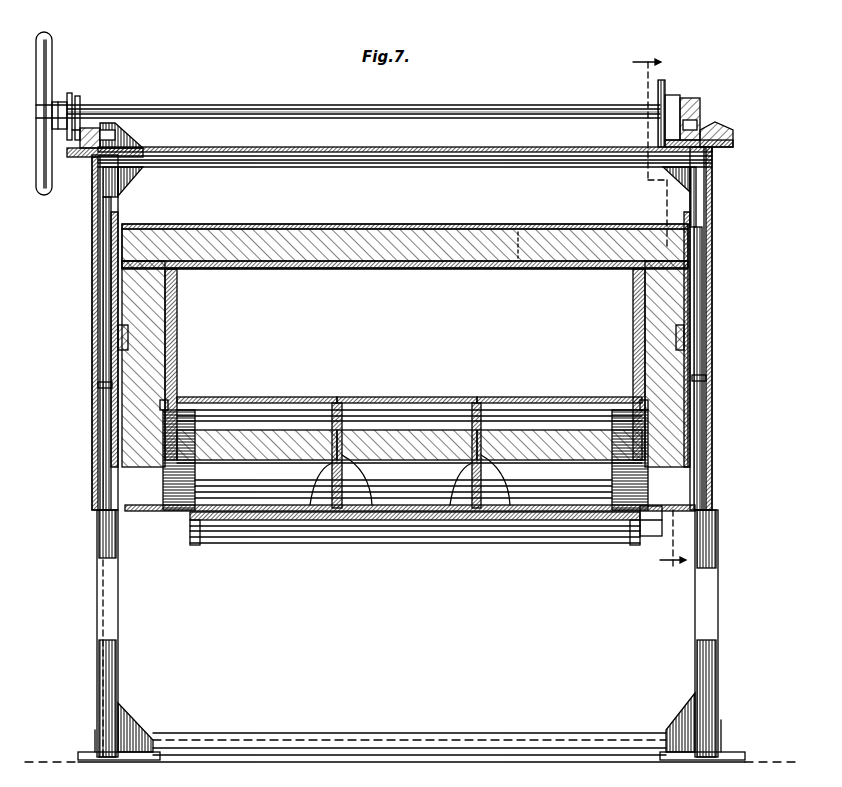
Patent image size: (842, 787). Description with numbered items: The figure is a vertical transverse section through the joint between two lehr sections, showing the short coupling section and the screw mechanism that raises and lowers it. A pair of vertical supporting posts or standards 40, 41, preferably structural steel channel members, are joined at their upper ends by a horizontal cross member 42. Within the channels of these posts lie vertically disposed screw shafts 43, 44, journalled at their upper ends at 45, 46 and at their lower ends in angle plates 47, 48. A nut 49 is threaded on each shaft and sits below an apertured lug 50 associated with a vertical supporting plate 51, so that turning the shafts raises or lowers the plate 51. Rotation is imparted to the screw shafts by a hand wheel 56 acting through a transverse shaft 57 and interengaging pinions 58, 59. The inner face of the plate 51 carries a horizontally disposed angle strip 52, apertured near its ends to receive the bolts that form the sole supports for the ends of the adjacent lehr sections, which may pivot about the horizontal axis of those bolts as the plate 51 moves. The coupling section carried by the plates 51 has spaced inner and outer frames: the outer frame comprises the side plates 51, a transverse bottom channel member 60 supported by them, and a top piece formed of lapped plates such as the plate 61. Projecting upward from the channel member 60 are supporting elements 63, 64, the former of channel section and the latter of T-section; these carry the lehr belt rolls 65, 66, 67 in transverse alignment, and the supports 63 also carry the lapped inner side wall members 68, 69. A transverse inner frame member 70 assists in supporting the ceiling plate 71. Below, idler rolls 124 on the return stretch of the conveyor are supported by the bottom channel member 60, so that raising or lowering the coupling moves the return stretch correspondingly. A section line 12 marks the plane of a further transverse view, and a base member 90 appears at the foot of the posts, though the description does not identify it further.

The section line 12- 12 is at (659, 314).
The supporting post 40 is at (718, 560).
The supporting post 41 is at (97, 572).
The horizontal cross member 42 is at (380, 152).
The screw shaft 43 is at (698, 178).
The screw shaft 44 is at (113, 188).
The upper journal 45 is at (707, 130).
The upper journal 46 is at (112, 146).
The angle plate 47 is at (706, 378).
The angle plate 48 is at (98, 386).
The nut 49 is at (96, 238).
The apertured lug 50 is at (92, 223).
The vertical supporting plate 51 is at (110, 298).
The angle strip 52 is at (126, 334).
The hand wheel 56 is at (46, 75).
The transverse shaft 57 is at (243, 118).
The pinion 58 is at (100, 128).
The pinion 59 is at (687, 108).
The bottom channel member 60 is at (160, 520).
The lapped plate 61 is at (383, 224).
The supporting element 63 is at (245, 528).
The supporting element 64 is at (368, 500).
The lehr belt roll 65 is at (300, 403).
The lehr belt roll 66 is at (406, 405).
The lehr belt roll 67 is at (518, 402).
The inner side wall member 68 is at (173, 325).
The inner side wall member 69 is at (178, 343).
The transverse inner frame member 70 is at (519, 232).
The ceiling plate 71 is at (398, 271).
The base 90 is at (412, 760).
The idler roll 124 is at (477, 530).